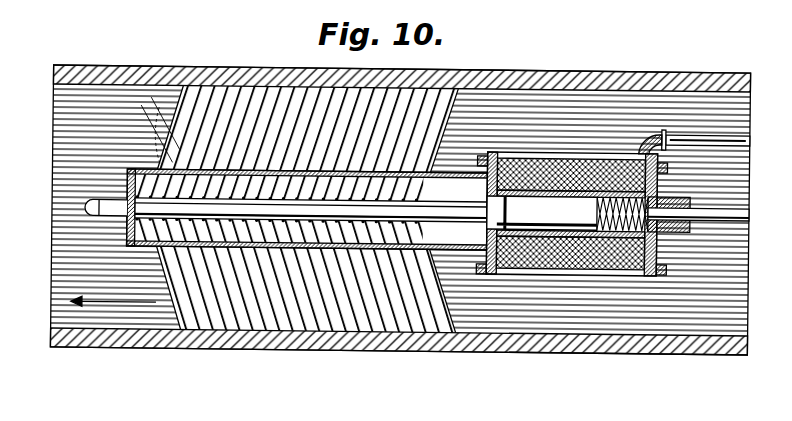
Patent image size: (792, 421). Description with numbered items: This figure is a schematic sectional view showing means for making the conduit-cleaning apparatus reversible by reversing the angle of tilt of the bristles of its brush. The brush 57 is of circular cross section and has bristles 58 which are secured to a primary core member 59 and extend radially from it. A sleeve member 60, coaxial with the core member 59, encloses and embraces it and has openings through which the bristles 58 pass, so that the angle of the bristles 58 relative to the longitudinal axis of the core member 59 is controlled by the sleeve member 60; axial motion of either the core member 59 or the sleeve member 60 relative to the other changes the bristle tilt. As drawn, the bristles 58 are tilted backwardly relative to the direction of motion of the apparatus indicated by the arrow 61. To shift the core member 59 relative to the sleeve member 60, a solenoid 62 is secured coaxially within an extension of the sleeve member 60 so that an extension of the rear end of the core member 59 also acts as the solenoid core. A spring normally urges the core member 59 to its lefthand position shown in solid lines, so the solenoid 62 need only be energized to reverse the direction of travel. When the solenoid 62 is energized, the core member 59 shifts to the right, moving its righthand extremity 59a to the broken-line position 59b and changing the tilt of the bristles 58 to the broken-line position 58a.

The brush 57 is at (296, 318).
The bristles 58 is at (166, 260).
The bristles in broken-line position 58a is at (162, 123).
The primary core member 59 is at (93, 216).
The righthand extremity of core member 59a is at (597, 208).
The broken-line position of core extremity 59b is at (660, 190).
The sleeve member 60 is at (127, 233).
The arrow indicating direction of motion 61 is at (120, 306).
The solenoid 62 is at (657, 254).